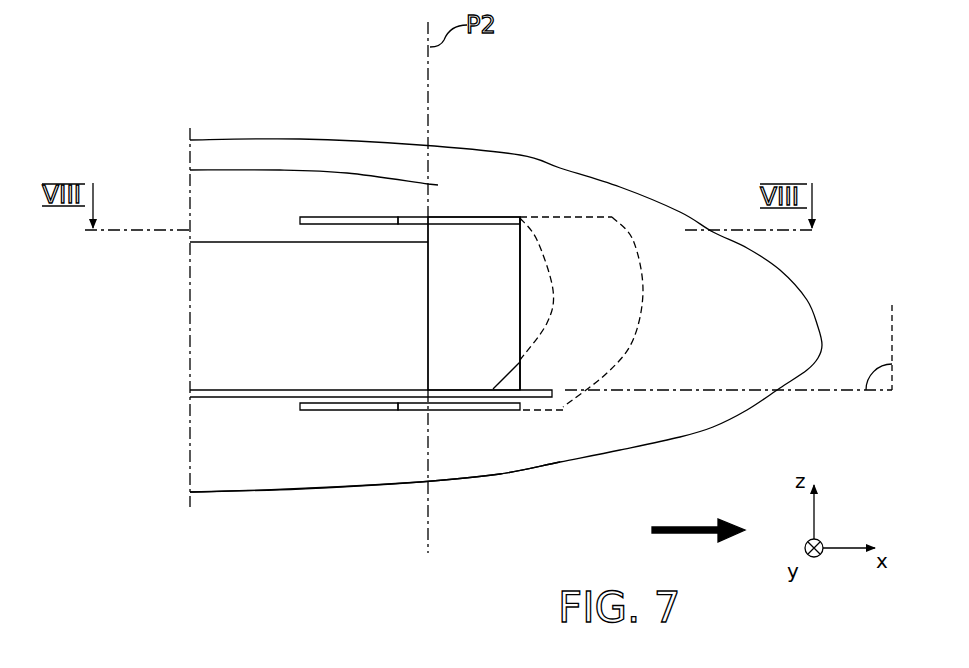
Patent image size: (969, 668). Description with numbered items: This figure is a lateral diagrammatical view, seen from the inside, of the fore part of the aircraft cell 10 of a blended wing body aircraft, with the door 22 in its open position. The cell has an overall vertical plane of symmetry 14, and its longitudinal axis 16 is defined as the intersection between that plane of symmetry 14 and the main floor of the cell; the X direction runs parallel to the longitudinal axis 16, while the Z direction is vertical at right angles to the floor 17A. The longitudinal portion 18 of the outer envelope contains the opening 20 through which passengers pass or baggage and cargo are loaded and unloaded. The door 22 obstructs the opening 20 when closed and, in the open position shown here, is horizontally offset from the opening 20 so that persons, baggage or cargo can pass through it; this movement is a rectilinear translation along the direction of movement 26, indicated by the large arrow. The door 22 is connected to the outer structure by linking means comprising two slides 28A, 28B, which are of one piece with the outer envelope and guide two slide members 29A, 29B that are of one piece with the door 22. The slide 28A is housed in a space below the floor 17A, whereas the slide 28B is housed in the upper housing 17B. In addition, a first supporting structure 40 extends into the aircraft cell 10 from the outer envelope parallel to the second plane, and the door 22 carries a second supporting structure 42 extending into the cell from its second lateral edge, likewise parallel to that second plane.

The aircraft cell 10 is at (692, 117).
The overall vertical plane of symmetry 14 is at (879, 383).
The longitudinal axis 16 is at (827, 392).
The floor 17A is at (218, 400).
The upper housing 17B is at (277, 167).
The longitudinal portion of the outer envelope 18 is at (540, 456).
The opening 20 is at (481, 309).
The door 22 is at (518, 327).
The direction of movement 26 is at (690, 523).
The slide 28A is at (325, 410).
The slide 28B is at (355, 217).
The slide member 29A is at (498, 410).
The slide member 29B is at (468, 217).
The first supporting structure 40 is at (432, 273).
The second supporting structure 42 is at (520, 257).